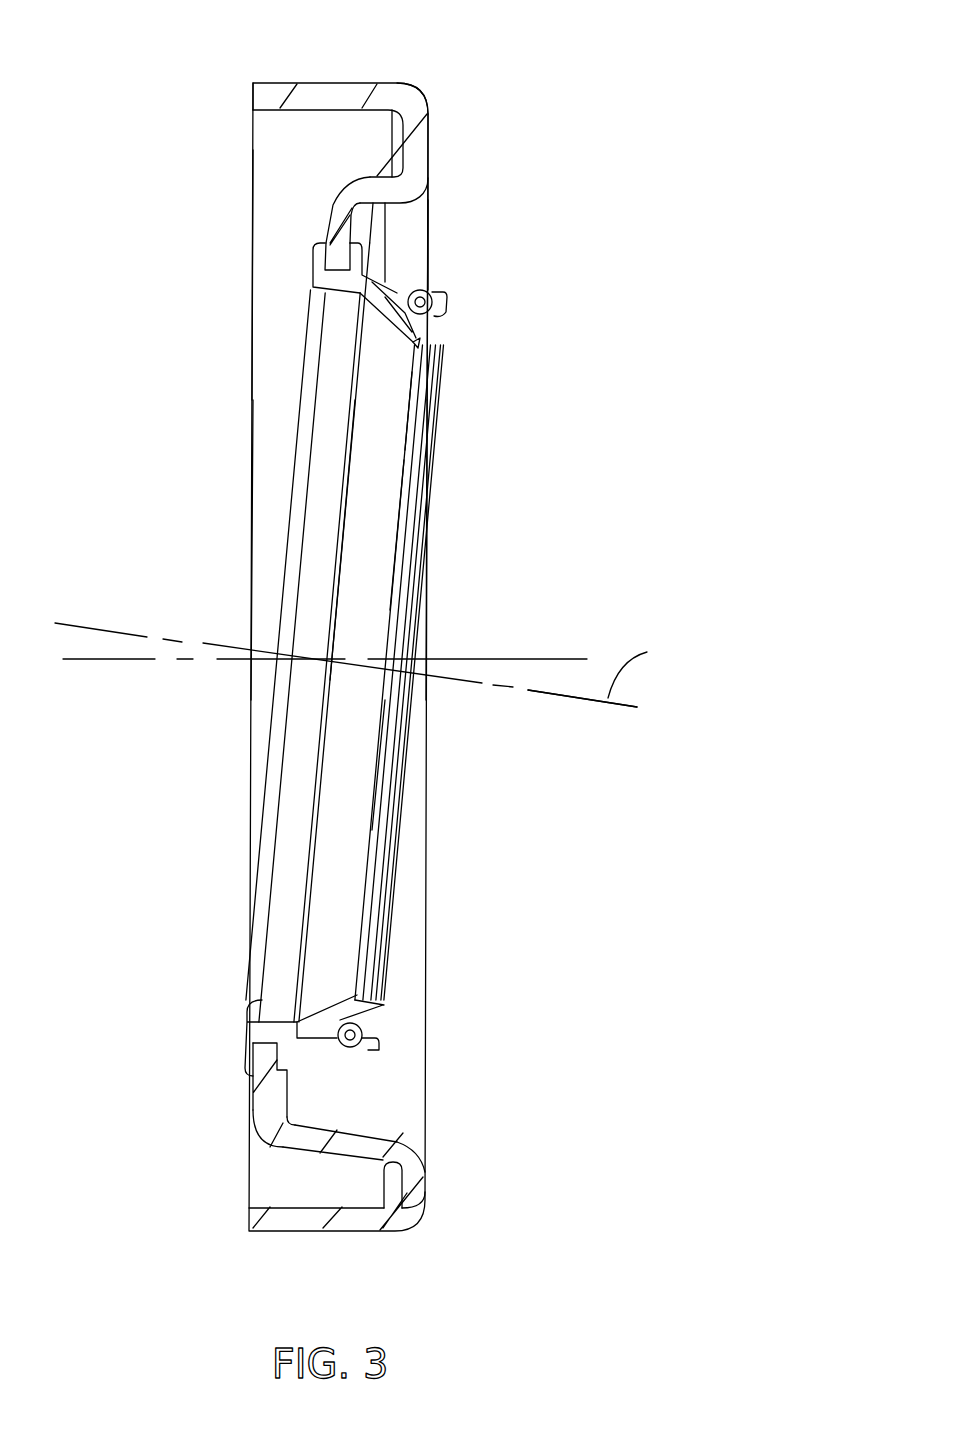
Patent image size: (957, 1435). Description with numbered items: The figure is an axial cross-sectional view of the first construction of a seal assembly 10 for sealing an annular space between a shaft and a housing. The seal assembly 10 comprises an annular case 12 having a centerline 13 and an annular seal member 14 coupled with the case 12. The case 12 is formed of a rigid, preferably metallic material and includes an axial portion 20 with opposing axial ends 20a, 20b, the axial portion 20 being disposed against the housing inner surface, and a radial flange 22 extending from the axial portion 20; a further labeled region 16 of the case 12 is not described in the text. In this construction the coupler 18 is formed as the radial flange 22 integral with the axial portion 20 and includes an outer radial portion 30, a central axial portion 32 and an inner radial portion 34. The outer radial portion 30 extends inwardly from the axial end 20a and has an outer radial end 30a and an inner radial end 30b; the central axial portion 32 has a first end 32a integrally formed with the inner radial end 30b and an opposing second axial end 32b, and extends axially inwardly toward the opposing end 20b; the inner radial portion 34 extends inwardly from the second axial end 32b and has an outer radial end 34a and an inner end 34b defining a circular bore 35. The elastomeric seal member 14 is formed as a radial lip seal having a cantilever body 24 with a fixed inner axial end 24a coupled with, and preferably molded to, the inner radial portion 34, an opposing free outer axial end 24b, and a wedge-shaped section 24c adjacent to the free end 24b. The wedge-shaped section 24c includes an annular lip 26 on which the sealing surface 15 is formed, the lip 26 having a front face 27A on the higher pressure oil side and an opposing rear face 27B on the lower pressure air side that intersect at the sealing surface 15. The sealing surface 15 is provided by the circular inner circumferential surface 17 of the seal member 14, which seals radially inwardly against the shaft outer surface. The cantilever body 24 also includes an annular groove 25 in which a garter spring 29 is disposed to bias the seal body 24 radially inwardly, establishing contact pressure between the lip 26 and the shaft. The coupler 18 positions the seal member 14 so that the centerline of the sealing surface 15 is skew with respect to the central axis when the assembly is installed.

The seal assembly 10 is at (560, 250).
The annular case 12 is at (472, 83).
The centerline 13 is at (557, 659).
The annular seal member 14 is at (476, 448).
The sealing surface 15 is at (402, 521).
The left wall 16 is at (282, 215).
The inner circumferential surface 17 is at (373, 797).
The coupler 18 is at (440, 218).
The axial portion 20 is at (333, 80).
The axial end 20a is at (390, 97).
The axial end 20b is at (262, 90).
The radial flange 22 is at (445, 138).
The cantilever body 24 is at (318, 335).
The inner axial end 24a is at (313, 273).
The outer axial end 24b is at (447, 300).
The wedge-shaped section 24c is at (440, 322).
The annular groove 25 is at (368, 1041).
The annular lip 26 is at (432, 346).
The front face 27A is at (400, 576).
The rear face 27B is at (365, 570).
The garter spring 29 is at (428, 292).
The outer radial portion 30 is at (417, 140).
The outer radial end 30a is at (410, 1208).
The inner radial end 30b is at (412, 1167).
The central axial portion 32 is at (372, 173).
The first end 32a is at (397, 1150).
The second axial end 32b is at (277, 1133).
The inner radial portion 34 is at (333, 218).
The outer radial end 34a is at (260, 1113).
The inner end 34b is at (260, 1061).
The circular bore 35 is at (263, 1015).